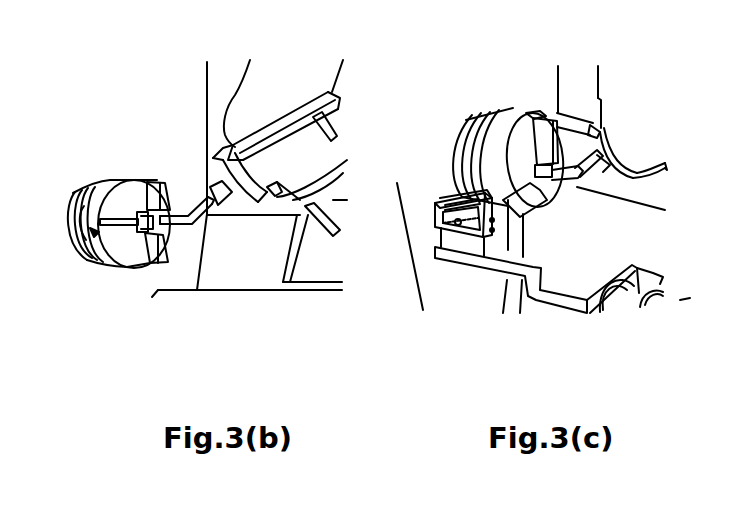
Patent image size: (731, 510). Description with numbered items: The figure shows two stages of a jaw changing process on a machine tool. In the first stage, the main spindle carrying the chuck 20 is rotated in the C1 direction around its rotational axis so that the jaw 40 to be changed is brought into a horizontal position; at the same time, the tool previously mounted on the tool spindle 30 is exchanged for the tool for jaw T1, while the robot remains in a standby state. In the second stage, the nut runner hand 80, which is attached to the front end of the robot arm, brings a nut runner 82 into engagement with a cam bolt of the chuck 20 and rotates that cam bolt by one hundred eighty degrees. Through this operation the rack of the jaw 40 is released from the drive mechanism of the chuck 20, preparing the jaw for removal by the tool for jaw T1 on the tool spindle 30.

In FIG. 3B, the chuck 20 is at (128, 205).
In FIG. 3C, the chuck 20 is at (512, 138).
In FIG. 3B, the tool spindle 30 is at (290, 160).
In FIG. 3C, the tool spindle 30 is at (633, 178).
In FIG. 3B, the jaw 40 is at (137, 220).
In FIG. 3C, the jaw 40 is at (535, 190).
In FIG. 3C, the nut runner hand 80 is at (478, 238).
In FIG. 3C, the nut runner 82 is at (493, 192).
In FIG. 3B, the rotation direction C1 is at (78, 231).
In FIG. 3B, the tool for jaw T1 is at (172, 228).